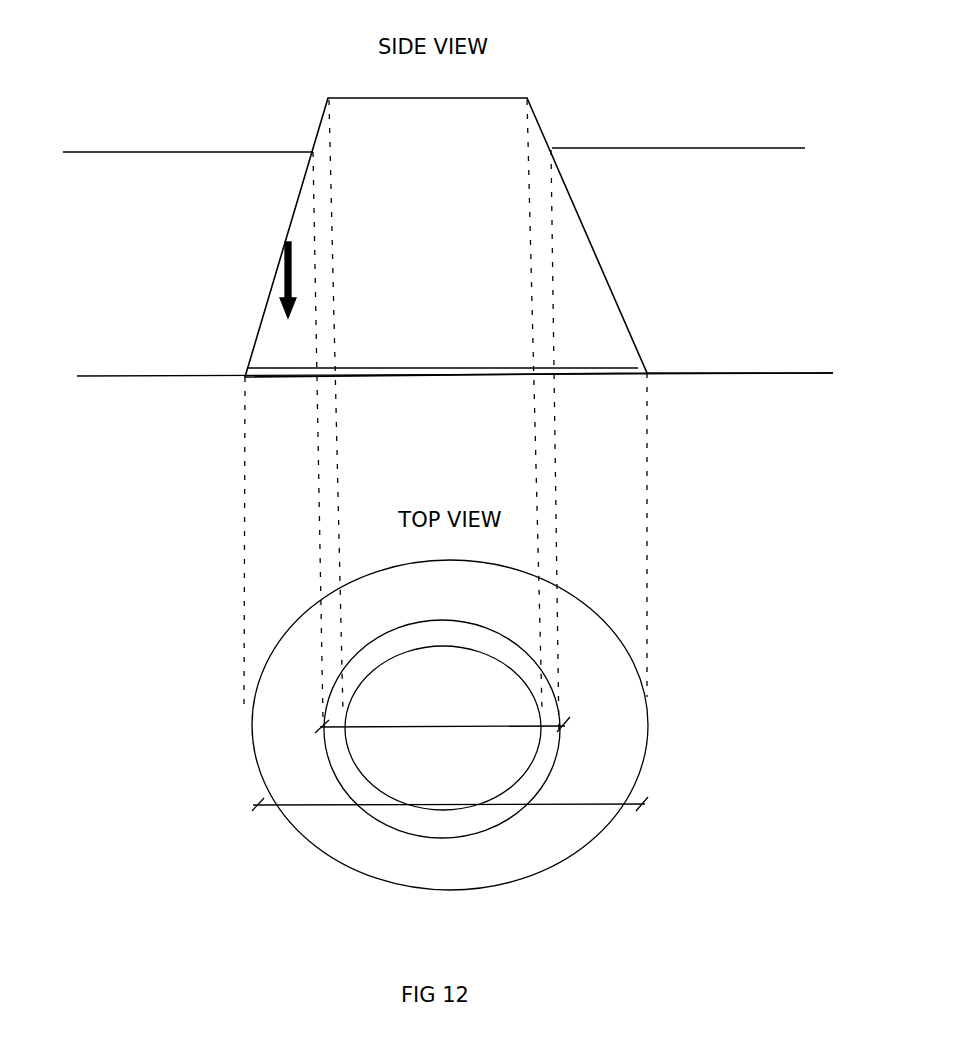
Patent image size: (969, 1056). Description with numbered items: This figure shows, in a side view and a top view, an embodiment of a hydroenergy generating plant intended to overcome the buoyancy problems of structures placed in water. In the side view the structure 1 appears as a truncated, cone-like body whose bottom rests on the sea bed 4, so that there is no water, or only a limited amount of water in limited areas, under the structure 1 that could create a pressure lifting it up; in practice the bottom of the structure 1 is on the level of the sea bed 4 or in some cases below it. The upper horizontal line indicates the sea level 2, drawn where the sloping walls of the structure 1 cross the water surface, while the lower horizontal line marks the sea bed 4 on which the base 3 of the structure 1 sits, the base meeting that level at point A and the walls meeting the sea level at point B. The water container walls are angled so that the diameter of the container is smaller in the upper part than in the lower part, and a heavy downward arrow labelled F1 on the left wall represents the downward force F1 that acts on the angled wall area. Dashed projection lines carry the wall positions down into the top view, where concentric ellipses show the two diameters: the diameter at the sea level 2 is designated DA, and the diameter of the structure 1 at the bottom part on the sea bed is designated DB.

The structure 1 is at (320, 127).
The sea level 2 is at (110, 152).
The base of truncated cone 3 is at (453, 367).
The sea bed 4 is at (110, 377).
The lower section level A is at (647, 373).
The upper section level B is at (552, 148).
The downward force F1 is at (263, 280).
The diameter at the sea level DA is at (450, 796).
The diameter of the structure at the bottom part DB is at (442, 711).